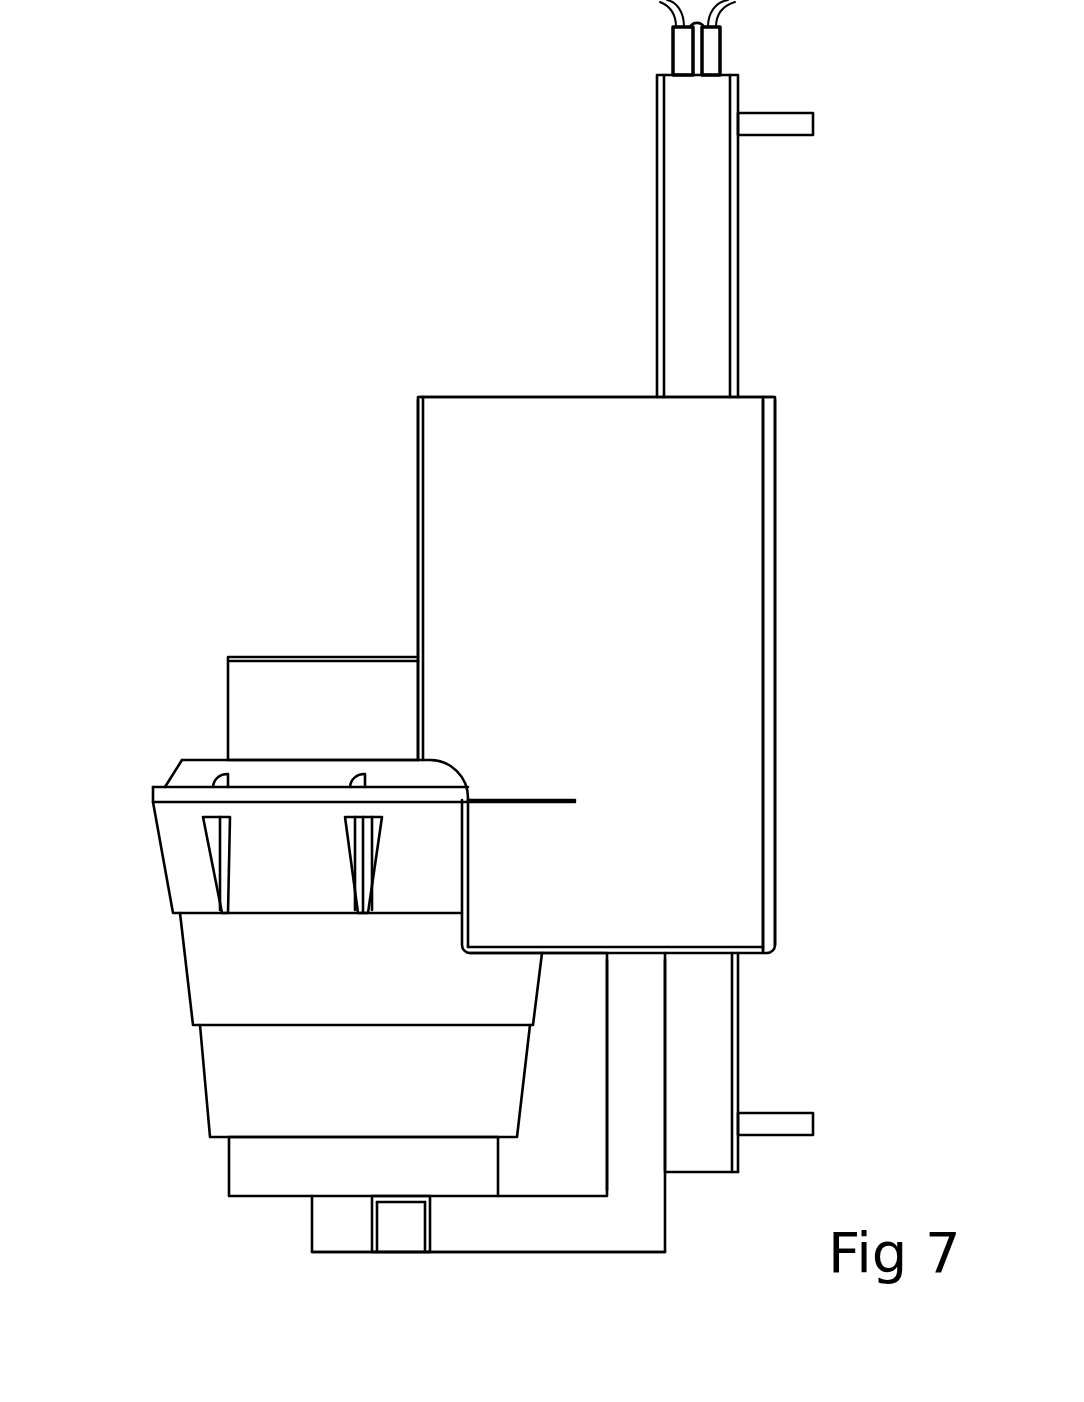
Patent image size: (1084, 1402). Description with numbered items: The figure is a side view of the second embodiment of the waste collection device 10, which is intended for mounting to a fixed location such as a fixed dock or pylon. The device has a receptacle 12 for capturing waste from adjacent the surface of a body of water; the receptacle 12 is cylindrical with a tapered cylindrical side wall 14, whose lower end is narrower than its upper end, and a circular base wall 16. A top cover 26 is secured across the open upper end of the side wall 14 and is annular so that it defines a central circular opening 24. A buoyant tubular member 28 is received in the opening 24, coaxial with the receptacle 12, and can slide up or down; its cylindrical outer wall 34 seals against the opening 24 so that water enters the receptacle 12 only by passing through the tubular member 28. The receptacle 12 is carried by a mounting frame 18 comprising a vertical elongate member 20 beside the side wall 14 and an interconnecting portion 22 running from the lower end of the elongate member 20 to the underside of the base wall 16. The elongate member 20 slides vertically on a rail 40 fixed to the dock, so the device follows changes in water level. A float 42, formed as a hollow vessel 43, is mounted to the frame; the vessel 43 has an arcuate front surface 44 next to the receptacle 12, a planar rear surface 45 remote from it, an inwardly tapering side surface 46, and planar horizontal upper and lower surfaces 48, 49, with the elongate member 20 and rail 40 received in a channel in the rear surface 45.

The waste collection device 10 is at (201, 525).
The receptacle 12 is at (235, 993).
The cylindrical side wall 14 is at (230, 1103).
The circular base wall 16 is at (330, 1200).
The mounting frame 18 is at (690, 1213).
The elongate member 20 is at (648, 1038).
The interconnecting portion 22 is at (508, 1230).
The opening 24 is at (222, 755).
The top cover 26 is at (190, 773).
The tubular member 28 is at (300, 688).
The cylindrical outer wall 34 is at (362, 727).
The rail 40 is at (735, 260).
The float 42 is at (740, 525).
The vessel 43 is at (717, 718).
The arcuate front surface 44 is at (413, 475).
The planar rear surface 45 is at (790, 855).
The inwardly tapering side surface 46 is at (610, 670).
The planar horizontal upper surface 48 is at (590, 395).
The planar horizontal lower surface 49 is at (583, 960).